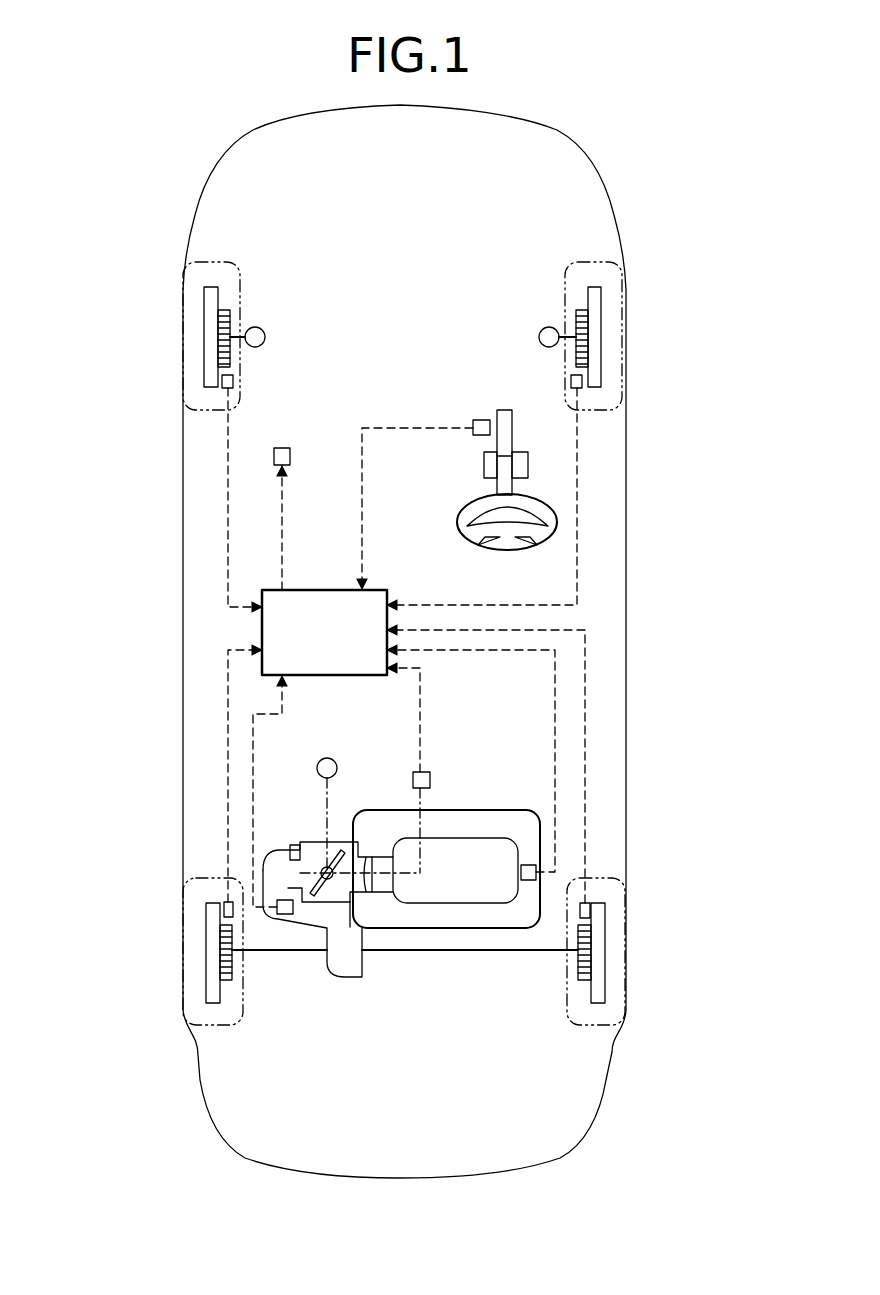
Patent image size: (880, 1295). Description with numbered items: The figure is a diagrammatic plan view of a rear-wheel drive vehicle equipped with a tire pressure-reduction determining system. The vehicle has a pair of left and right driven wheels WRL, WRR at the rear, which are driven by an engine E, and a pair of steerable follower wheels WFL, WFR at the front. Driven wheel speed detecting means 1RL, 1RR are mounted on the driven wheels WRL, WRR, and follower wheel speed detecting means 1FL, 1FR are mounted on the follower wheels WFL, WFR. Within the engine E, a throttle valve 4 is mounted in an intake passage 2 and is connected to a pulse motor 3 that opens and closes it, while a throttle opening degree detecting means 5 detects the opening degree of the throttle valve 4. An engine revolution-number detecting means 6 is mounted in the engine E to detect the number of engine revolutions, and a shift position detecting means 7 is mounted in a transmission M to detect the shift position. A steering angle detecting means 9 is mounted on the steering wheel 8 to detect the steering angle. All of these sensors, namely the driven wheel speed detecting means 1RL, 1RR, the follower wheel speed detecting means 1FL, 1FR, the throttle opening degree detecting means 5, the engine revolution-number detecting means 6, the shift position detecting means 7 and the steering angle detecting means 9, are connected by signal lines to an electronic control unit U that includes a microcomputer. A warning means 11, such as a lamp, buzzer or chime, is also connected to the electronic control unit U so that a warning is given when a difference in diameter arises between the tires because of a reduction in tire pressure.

The follower wheel speed detecting means 1FL is at (226, 385).
The follower wheel speed detecting means 1FR is at (580, 386).
The driven wheel speed detecting means 1RL is at (228, 903).
The driven wheel speed detecting means 1RR is at (588, 903).
The follower wheel WFL is at (183, 328).
The follower wheel WFR is at (622, 330).
The driven wheel WRL is at (183, 930).
The driven wheel WRR is at (625, 950).
The electronic control unit U is at (304, 650).
The engine E is at (484, 806).
The transmission M is at (279, 842).
The intake passage 2 is at (296, 845).
The pulse motor 3 is at (337, 764).
The throttle valve 4 is at (342, 848).
The throttle opening degree detecting means 5 is at (431, 779).
The engine revolution-number detecting means 6 is at (521, 870).
The shift position detecting means 7 is at (285, 914).
The steering wheel 8 is at (528, 510).
The steering angle detecting means 9 is at (481, 420).
The warning means 11 is at (290, 456).